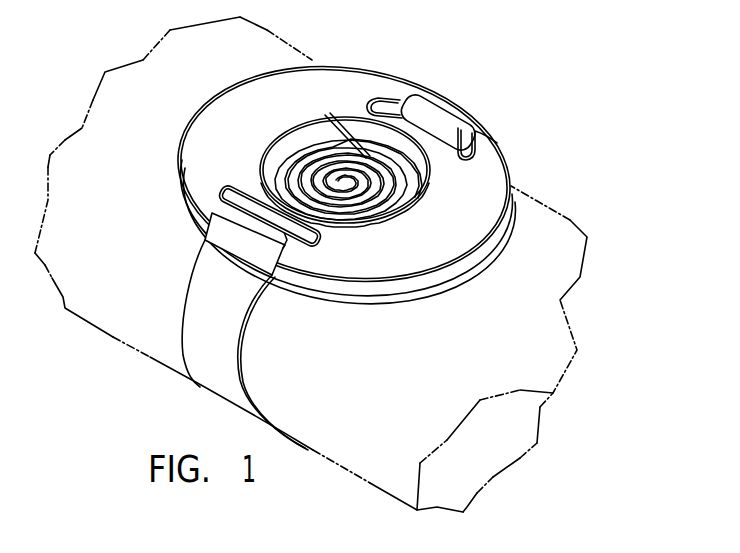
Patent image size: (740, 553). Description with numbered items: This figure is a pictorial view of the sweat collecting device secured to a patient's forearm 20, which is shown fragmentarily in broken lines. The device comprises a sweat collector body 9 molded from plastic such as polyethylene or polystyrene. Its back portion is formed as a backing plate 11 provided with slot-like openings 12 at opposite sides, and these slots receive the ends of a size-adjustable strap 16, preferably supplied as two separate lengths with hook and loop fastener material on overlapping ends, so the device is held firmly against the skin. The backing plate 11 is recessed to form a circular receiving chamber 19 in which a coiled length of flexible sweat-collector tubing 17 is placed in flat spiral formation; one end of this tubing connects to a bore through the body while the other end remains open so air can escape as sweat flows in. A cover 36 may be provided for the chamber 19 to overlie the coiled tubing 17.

The sweat collector body 9 is at (334, 62).
The backing plate 11 is at (497, 167).
The slot-like openings 12 is at (232, 193).
The straps 16 is at (195, 308).
The sweat-collector tubing 17 is at (357, 188).
The receiving chamber 19 is at (318, 122).
The forearm 20 is at (398, 377).
The cover 36 is at (287, 133).